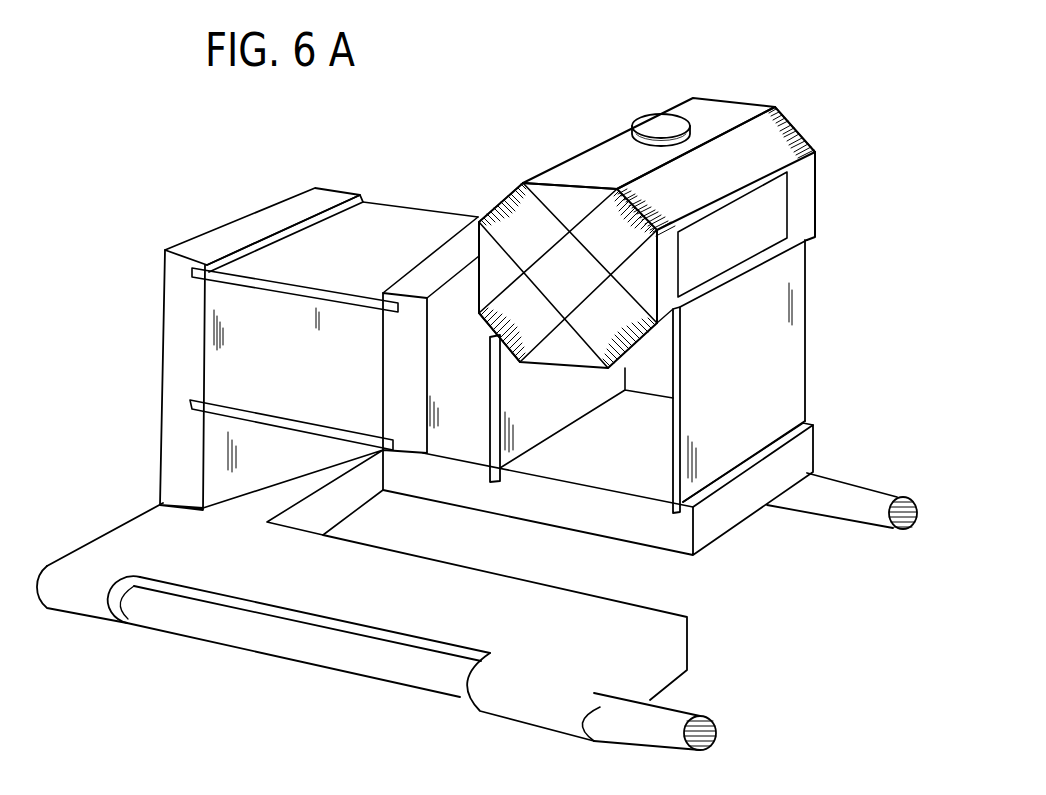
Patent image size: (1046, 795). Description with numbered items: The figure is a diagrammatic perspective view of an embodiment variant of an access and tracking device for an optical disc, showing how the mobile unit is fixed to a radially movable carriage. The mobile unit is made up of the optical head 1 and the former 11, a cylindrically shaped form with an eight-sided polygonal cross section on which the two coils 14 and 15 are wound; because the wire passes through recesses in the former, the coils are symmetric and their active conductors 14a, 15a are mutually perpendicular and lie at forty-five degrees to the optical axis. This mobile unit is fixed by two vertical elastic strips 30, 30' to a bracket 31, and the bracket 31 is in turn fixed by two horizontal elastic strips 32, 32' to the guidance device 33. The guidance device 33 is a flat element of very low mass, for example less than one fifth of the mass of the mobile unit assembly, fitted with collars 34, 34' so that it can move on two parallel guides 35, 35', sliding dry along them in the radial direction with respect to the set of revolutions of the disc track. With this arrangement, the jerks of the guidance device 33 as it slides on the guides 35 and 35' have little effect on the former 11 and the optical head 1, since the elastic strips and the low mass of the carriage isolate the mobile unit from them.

The optical head 1 is at (650, 126).
The former 11 is at (740, 99).
The coil 14 is at (638, 349).
The active conductors 14a is at (507, 199).
The coil 15 is at (797, 129).
The active conductors 15a is at (533, 330).
The vertical elastic strip 30 is at (767, 376).
The vertical elastic strip 30' is at (561, 408).
The bracket 31 is at (438, 265).
The horizontal elastic strip 32 is at (279, 326).
The horizontal elastic strip 32' is at (291, 418).
The guidance device 33 is at (143, 506).
The collar 34 is at (82, 620).
The collar 34' is at (351, 675).
The guide 35 is at (672, 713).
The guide 35' is at (842, 520).